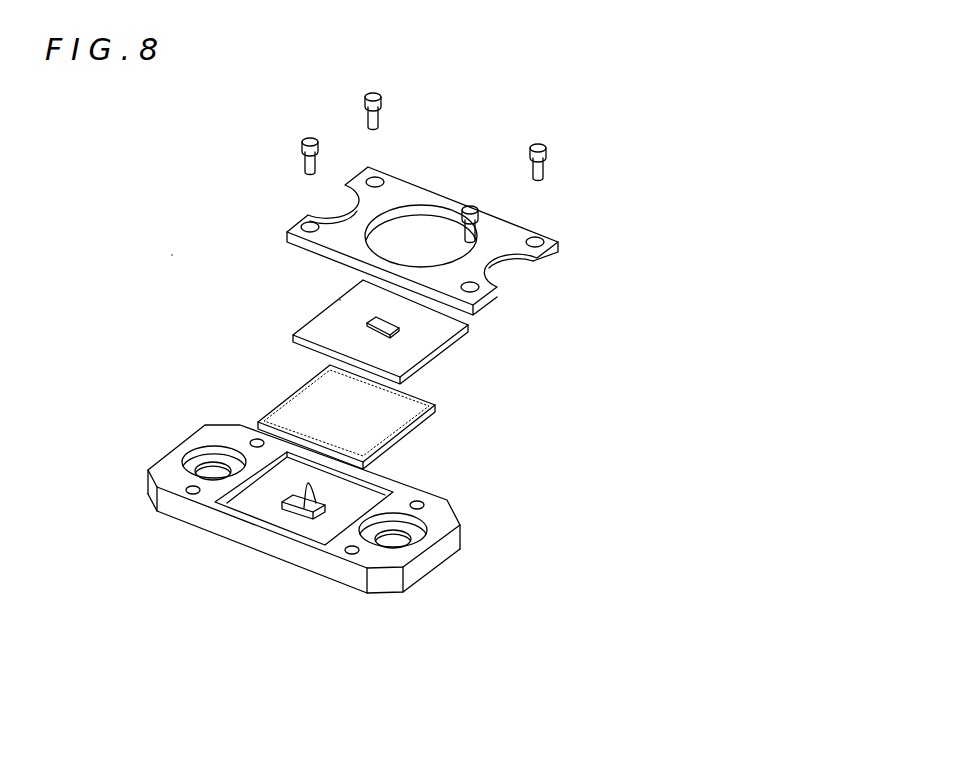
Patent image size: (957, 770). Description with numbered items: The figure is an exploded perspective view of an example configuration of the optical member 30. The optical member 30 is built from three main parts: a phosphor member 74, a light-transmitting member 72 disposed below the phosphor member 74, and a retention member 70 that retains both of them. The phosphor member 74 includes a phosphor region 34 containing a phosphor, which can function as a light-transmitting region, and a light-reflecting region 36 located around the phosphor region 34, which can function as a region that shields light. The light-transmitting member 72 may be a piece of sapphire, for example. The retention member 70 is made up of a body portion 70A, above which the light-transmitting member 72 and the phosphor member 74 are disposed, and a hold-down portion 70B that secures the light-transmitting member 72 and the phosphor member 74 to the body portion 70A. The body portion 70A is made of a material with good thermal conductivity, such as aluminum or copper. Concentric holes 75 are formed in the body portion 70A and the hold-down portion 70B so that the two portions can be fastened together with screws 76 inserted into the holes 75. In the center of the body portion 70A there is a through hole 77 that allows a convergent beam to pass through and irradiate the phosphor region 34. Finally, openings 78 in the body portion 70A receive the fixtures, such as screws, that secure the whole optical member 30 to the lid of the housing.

The optical member 30 is at (171, 252).
The phosphor region 34 is at (365, 322).
The light-reflecting region 36 is at (365, 300).
The retention member 70 is at (665, 352).
The body portion 70A is at (458, 515).
The hold-down portion 70B is at (545, 264).
The light-transmitting member 72 is at (435, 405).
The phosphor member 74 is at (468, 327).
The holes 75 is at (537, 242).
The screws 76 is at (548, 150).
The through hole 77 is at (317, 507).
The openings 78 is at (203, 460).